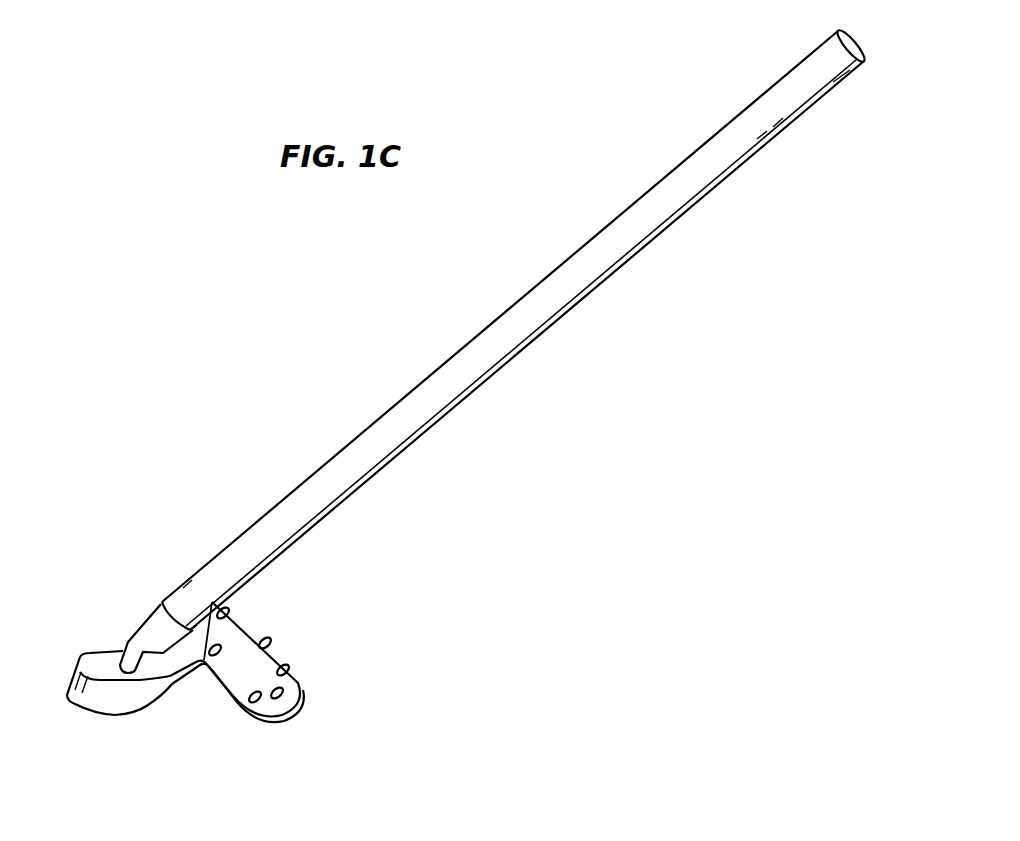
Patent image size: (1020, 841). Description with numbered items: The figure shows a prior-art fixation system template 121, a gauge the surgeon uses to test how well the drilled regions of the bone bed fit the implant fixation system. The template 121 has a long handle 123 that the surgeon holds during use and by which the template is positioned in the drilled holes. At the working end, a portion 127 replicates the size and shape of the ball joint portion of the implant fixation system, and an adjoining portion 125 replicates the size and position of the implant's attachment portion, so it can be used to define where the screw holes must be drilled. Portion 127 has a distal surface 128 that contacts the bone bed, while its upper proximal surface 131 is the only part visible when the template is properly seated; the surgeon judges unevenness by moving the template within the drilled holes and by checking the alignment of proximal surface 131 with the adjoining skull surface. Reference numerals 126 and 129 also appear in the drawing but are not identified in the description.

The template 121 is at (519, 328).
The handle 123 is at (548, 305).
The portion replicating attachment portion 125 is at (291, 664).
The bend portion 126 is at (258, 740).
The portion replicating ball joint portion 127 is at (113, 702).
The distal surface 128 is at (140, 690).
The bracket 129 is at (276, 677).
The proximal surface 131 is at (103, 662).